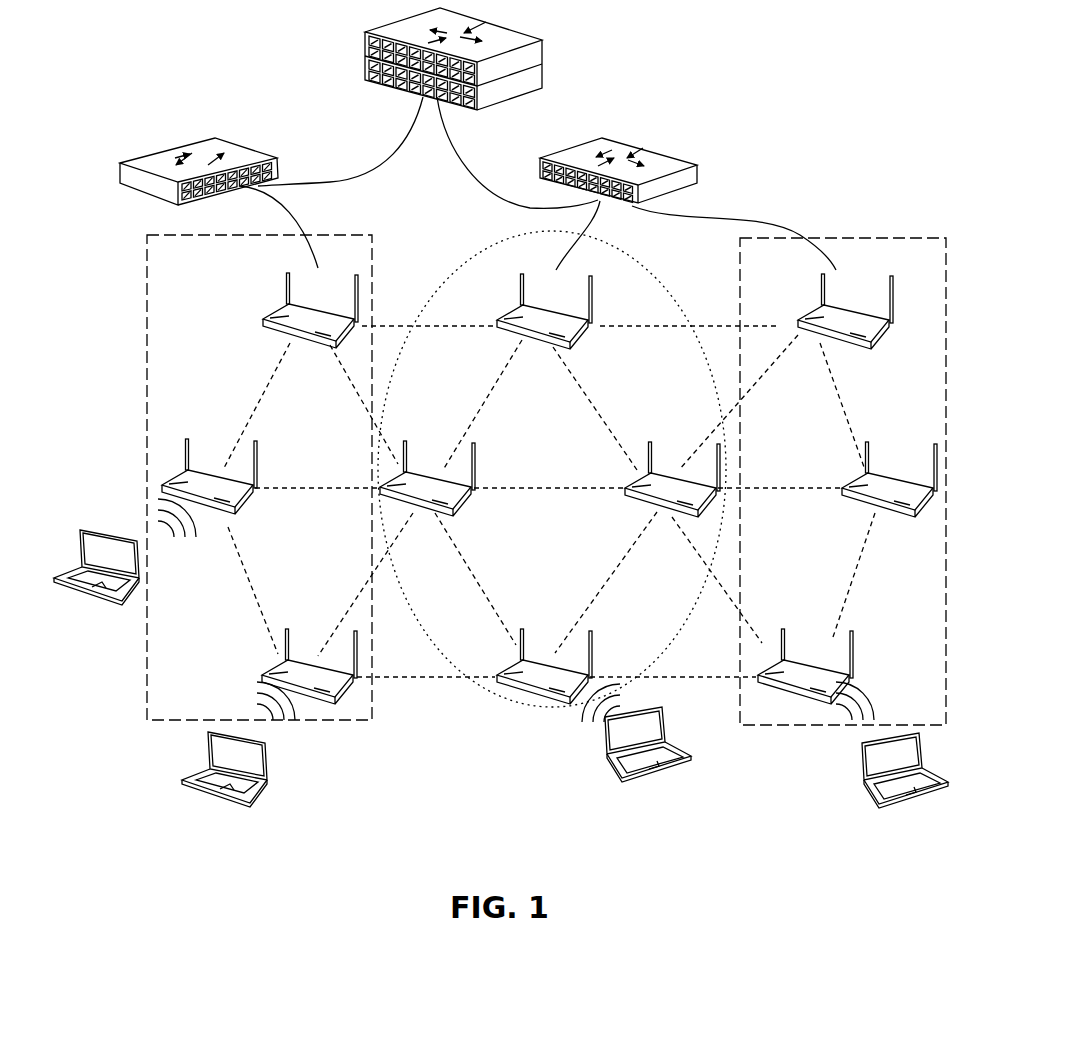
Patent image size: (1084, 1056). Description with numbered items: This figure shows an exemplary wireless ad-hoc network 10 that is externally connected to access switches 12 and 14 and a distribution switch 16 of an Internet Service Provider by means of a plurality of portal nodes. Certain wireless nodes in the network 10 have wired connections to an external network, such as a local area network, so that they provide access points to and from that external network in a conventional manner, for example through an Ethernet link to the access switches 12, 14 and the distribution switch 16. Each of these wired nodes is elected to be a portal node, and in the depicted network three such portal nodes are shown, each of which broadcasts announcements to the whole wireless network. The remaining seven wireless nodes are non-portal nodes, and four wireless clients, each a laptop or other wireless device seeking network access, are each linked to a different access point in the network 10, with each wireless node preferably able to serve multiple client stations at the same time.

The wireless ad-hoc network 10 is at (96, 393).
The access switch 12 is at (120, 167).
The access switch 14 is at (698, 173).
The distribution switch 16 is at (542, 47).